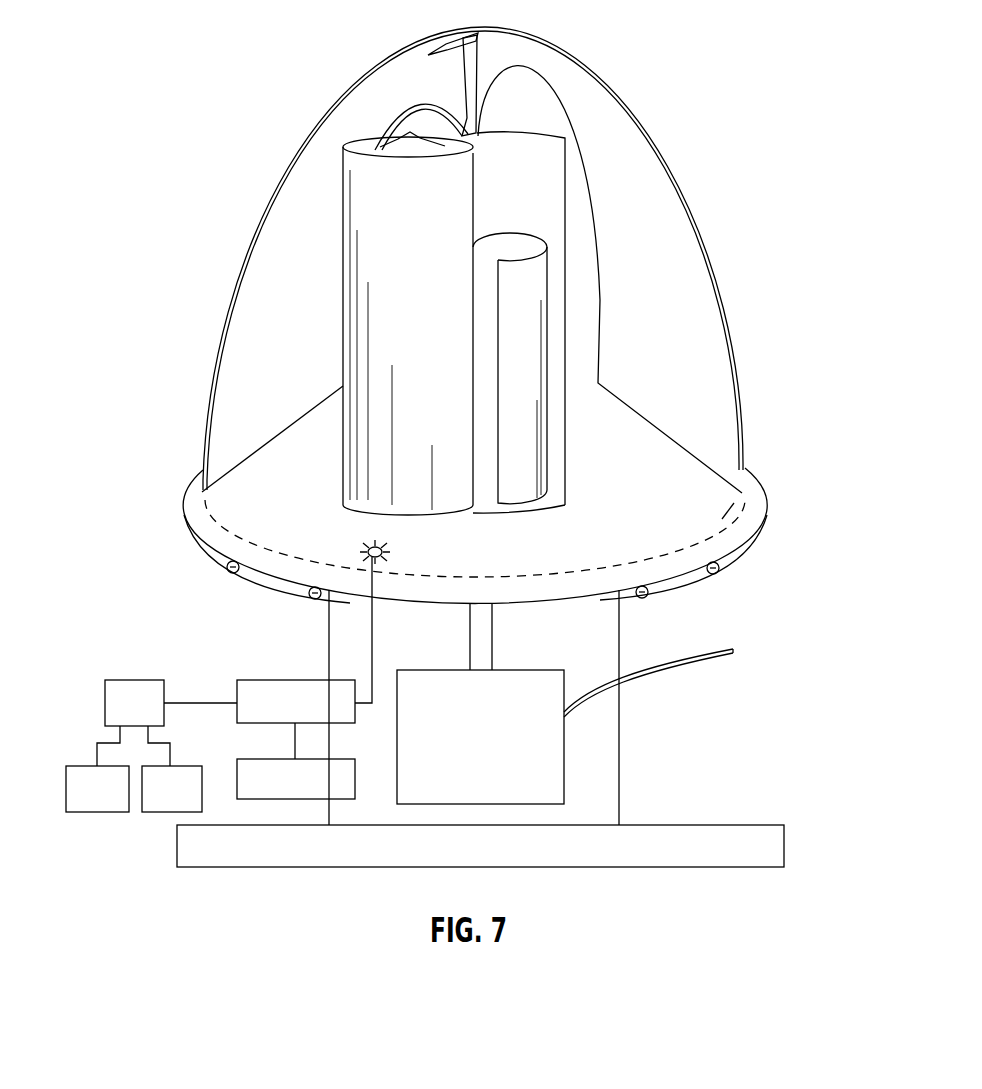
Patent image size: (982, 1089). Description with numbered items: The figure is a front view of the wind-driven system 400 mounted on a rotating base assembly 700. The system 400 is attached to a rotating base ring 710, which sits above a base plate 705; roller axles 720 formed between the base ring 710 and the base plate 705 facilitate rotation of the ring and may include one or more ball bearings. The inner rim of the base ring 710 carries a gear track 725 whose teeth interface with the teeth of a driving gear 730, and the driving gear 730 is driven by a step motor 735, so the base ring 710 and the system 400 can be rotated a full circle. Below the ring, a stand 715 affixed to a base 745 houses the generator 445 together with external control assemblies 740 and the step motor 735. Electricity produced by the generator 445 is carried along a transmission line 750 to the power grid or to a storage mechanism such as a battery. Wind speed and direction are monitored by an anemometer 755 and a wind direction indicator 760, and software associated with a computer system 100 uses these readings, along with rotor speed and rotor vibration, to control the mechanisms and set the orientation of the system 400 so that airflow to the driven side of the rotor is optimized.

The computer system 100 is at (155, 719).
The system 400 is at (380, 40).
The generator 445 is at (501, 753).
The rotating base assembly 700 is at (122, 849).
The base plate 705 is at (763, 533).
The base ring 710 is at (745, 448).
The stand 715 is at (620, 750).
The roller axles 720 is at (228, 570).
The gear track 725 is at (745, 527).
The driving gear 730 is at (362, 548).
The step motor 735 is at (317, 716).
The external control assemblies 740 is at (317, 795).
The base 745 is at (784, 845).
The transmission line 750 is at (714, 668).
The anemometer 755 is at (118, 805).
The wind direction indicator 760 is at (193, 805).